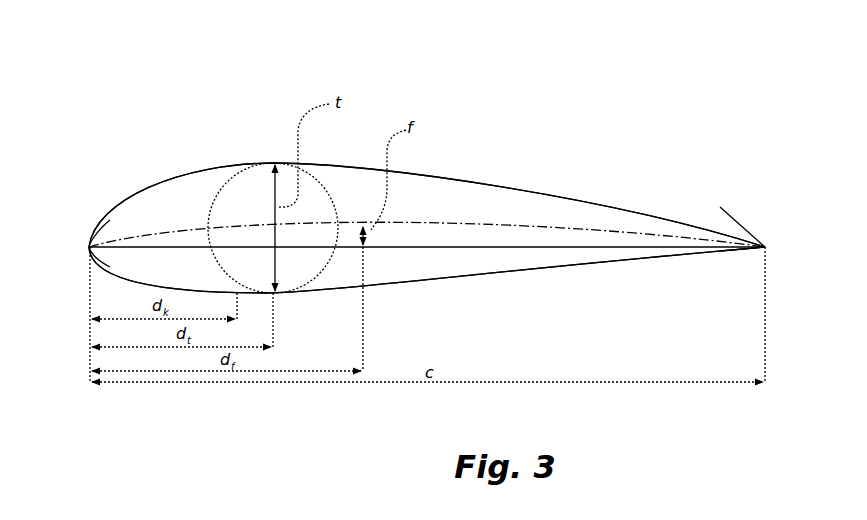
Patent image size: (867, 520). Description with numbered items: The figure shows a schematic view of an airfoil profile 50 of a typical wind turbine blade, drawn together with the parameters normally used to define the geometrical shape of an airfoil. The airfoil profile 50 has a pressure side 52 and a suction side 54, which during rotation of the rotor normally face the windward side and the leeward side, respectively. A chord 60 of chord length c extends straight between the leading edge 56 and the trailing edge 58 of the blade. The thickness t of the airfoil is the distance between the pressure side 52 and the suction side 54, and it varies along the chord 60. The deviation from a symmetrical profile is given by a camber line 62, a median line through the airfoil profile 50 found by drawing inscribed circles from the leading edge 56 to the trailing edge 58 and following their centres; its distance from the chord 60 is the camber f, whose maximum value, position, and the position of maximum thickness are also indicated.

The airfoil profile 50 is at (406, 94).
The pressure side 52 is at (560, 267).
The suction side 54 is at (510, 182).
The leading edge 56 is at (89, 247).
The trailing edge 58 is at (765, 247).
The chord 60 is at (593, 245).
The camber line 62 is at (420, 221).